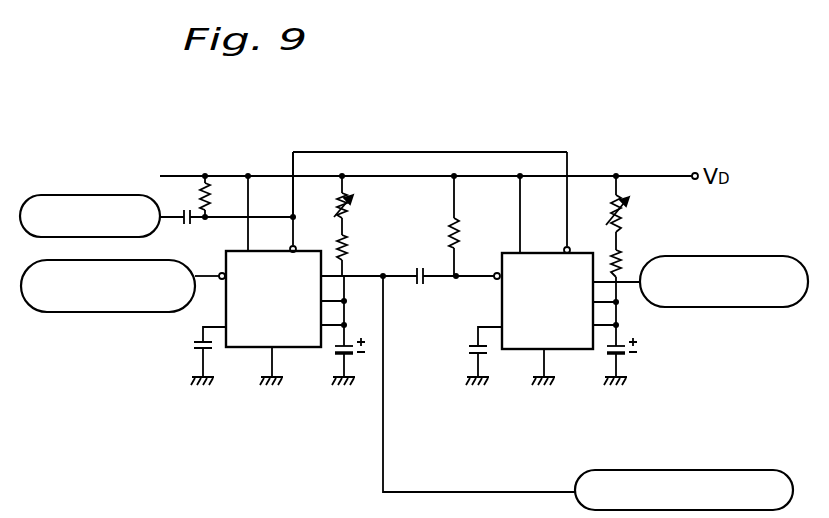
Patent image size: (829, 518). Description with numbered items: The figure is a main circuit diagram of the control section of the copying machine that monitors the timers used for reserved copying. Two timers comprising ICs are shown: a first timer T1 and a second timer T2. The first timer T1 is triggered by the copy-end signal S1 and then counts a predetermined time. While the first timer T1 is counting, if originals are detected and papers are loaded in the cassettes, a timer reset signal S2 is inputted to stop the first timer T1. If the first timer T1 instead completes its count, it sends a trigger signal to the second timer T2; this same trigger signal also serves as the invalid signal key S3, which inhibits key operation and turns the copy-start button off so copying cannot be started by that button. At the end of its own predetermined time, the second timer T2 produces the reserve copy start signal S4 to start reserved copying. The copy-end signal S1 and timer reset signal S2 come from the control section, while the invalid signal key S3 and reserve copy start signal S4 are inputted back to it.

The copy-end signal S1 is at (98, 312).
The timer reset signal S2 is at (93, 195).
The invalid signal key S3 is at (728, 470).
The reserve copy start signal S4 is at (730, 256).
The first timer T1 is at (247, 349).
The second timer T2 is at (522, 349).